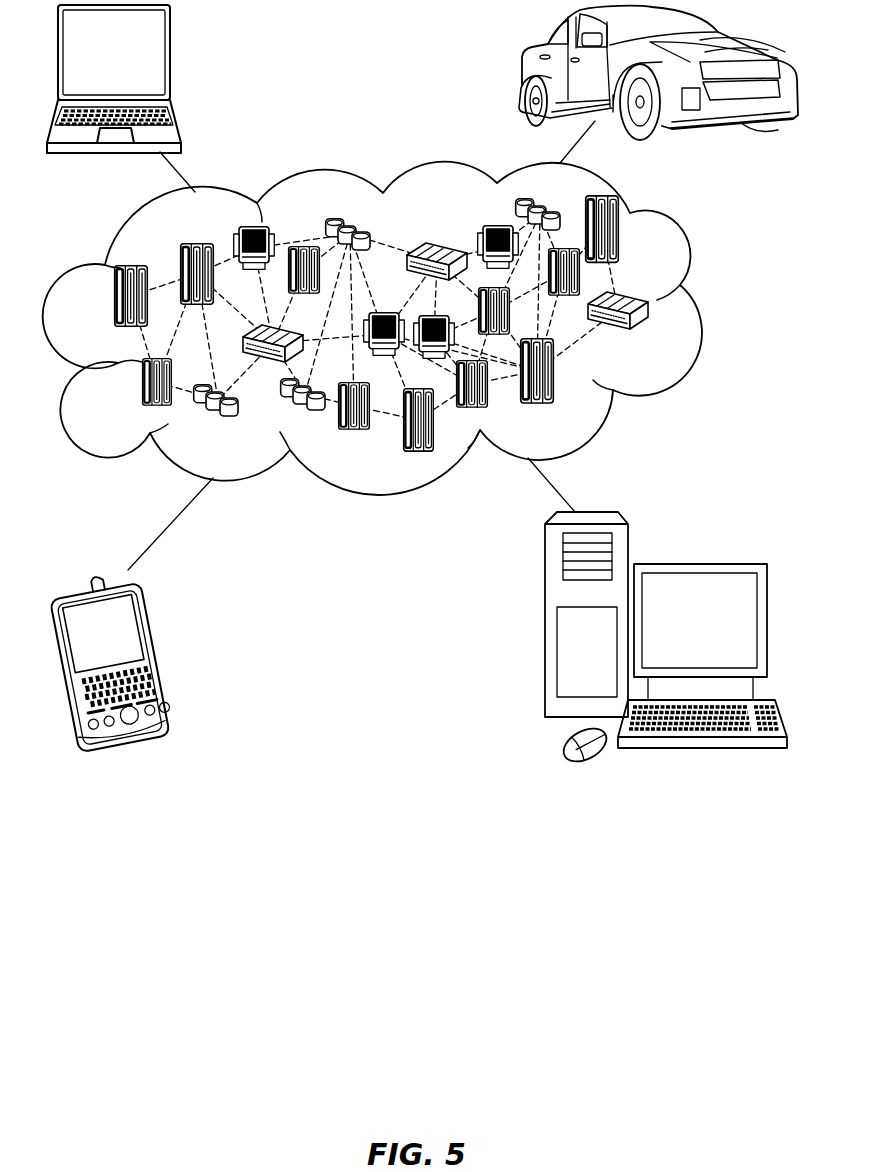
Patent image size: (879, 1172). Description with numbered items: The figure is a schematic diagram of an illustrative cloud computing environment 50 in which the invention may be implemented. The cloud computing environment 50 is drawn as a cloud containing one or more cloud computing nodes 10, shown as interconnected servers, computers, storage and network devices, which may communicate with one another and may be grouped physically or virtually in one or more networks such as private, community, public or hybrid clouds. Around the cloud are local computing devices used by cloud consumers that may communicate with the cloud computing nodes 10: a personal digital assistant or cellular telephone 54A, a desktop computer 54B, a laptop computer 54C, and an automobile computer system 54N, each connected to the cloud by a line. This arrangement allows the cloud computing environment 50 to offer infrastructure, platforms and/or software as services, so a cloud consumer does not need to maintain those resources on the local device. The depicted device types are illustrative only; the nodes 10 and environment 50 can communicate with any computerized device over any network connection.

The cloud computing nodes 10 is at (658, 338).
The cloud computing environment 50 is at (698, 304).
The personal digital assistant or cellular telephone 54A is at (160, 645).
The desktop computer 54B is at (697, 563).
The laptop computer 54C is at (172, 60).
The automobile computer system 54N is at (522, 73).